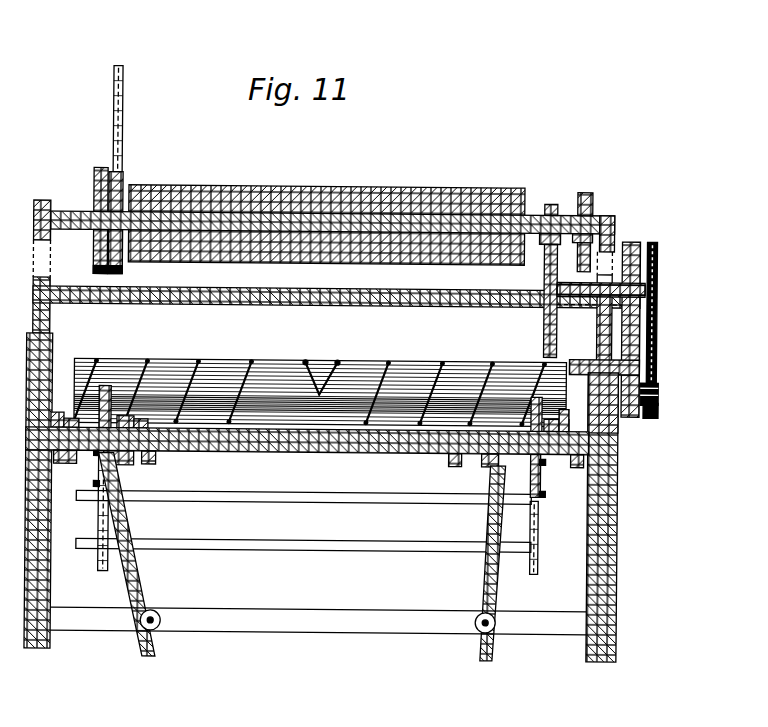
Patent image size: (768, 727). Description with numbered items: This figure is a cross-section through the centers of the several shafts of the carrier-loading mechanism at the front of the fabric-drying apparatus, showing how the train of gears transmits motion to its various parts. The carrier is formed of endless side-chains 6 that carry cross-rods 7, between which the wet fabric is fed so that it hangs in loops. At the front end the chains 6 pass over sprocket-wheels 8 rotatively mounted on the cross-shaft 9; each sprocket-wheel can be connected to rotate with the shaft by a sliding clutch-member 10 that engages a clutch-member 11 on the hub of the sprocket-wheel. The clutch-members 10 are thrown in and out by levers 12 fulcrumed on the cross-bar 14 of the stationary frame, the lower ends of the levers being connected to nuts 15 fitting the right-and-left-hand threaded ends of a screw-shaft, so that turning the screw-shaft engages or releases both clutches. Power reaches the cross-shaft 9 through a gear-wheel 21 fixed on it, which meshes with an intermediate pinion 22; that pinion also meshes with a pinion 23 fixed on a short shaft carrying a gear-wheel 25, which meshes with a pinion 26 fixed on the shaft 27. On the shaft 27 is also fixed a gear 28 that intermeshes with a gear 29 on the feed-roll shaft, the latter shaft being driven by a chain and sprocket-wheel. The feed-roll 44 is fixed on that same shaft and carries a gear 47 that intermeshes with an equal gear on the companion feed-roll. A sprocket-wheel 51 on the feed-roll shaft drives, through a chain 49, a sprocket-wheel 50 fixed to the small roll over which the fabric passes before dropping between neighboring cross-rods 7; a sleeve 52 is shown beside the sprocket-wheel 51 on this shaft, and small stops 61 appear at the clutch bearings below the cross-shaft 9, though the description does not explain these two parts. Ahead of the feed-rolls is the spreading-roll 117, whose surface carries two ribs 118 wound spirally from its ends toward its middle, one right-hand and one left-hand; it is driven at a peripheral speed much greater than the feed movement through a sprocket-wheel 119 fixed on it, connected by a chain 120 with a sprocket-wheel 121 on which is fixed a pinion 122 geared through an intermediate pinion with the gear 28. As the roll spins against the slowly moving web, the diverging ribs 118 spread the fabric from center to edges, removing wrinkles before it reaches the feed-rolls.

The endless side-chain 6 is at (100, 518).
The cross-rod 7 is at (343, 398).
The sprocket-wheel 8 is at (134, 466).
The cross-shaft 9 is at (347, 442).
The sliding clutch-member 10 is at (160, 455).
The clutch-member 11 is at (145, 464).
The lever 12 is at (148, 522).
The cross-bar 14 is at (277, 610).
The nut 15 is at (163, 611).
The gear-wheel 21 is at (620, 456).
The pinion 22 is at (605, 406).
The pinion 23 is at (560, 356).
The gear-wheel 25 is at (659, 396).
The pinion 26 is at (659, 307).
The shaft 27 is at (297, 293).
The gear 28 is at (545, 324).
The gear 29 is at (558, 196).
The feed-roll 44 is at (334, 192).
The gear 47 is at (589, 188).
The chain 49 is at (96, 168).
The sprocket-wheel 50 is at (95, 190).
The sprocket-wheel 51 is at (123, 109).
The sleeve 52 is at (122, 177).
The stop 61 is at (94, 482).
The spreading-roll 117 is at (283, 364).
The rib 118 is at (147, 356).
The sprocket-wheel 119 is at (659, 382).
The chain 120 is at (659, 249).
The sprocket-wheel 121 is at (657, 327).
The pinion 122 is at (659, 275).